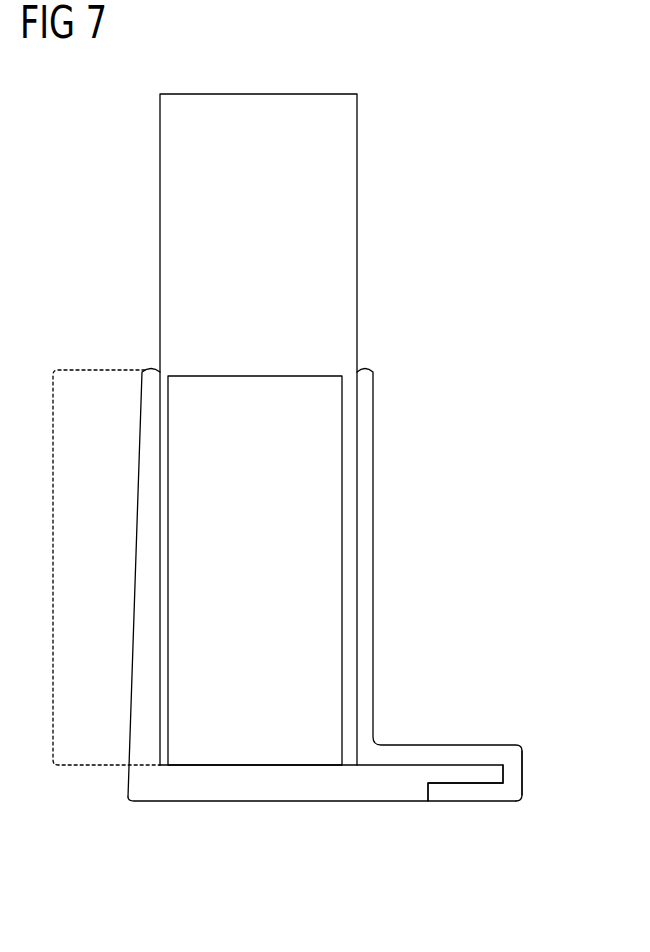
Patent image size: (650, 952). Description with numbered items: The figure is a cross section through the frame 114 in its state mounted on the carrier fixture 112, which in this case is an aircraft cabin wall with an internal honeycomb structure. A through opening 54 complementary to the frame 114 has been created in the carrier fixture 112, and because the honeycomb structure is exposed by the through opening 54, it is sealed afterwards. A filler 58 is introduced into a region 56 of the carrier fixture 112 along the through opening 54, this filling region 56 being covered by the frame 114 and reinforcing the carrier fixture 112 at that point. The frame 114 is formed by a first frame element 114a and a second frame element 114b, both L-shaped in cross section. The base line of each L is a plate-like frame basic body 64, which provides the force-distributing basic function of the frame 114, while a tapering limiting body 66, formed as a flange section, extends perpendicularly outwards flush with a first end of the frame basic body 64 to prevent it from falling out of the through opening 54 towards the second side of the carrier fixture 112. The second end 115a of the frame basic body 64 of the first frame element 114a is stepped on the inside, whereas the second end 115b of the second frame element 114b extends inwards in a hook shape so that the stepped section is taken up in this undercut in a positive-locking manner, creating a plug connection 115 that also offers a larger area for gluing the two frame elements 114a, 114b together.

The through opening 54 is at (277, 908).
The region of the carrier fixture 56 is at (58, 563).
The filler 58 is at (177, 605).
The frame basic body 64 is at (388, 797).
The limiting body 66 is at (143, 692).
The carrier fixture 112 is at (349, 214).
The frame 114 is at (305, 585).
The first frame element 114a is at (275, 583).
The second frame element 114b is at (372, 548).
The plug connection 115 is at (499, 831).
The second end of the frame basic body of the first frame element 115a is at (470, 778).
The second end of the frame basic body of the second frame element 115b is at (515, 774).